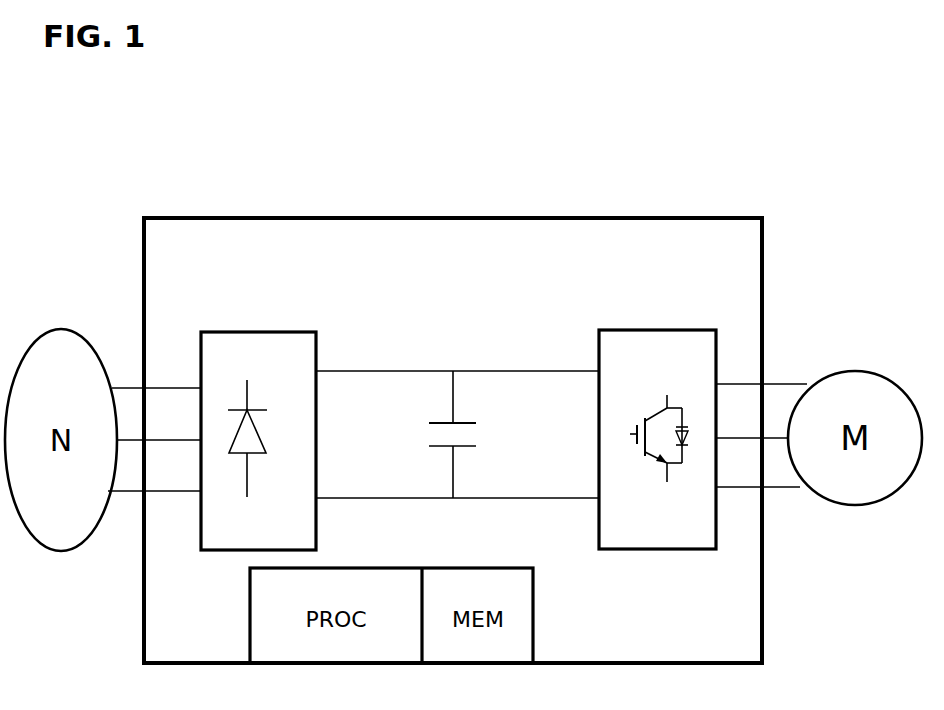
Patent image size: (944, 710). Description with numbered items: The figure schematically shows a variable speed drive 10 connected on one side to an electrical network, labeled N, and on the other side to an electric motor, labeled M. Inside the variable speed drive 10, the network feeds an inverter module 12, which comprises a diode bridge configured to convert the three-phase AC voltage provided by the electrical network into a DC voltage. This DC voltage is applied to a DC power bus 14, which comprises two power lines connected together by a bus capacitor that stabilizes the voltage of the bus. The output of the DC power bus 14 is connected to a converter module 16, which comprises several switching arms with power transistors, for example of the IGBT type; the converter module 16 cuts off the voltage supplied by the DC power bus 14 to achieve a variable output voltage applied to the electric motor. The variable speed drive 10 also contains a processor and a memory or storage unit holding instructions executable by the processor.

The variable speed drive 10 is at (311, 211).
The inverter module 12 is at (265, 325).
The DC power bus 14 is at (427, 362).
The converter module 16 is at (664, 320).